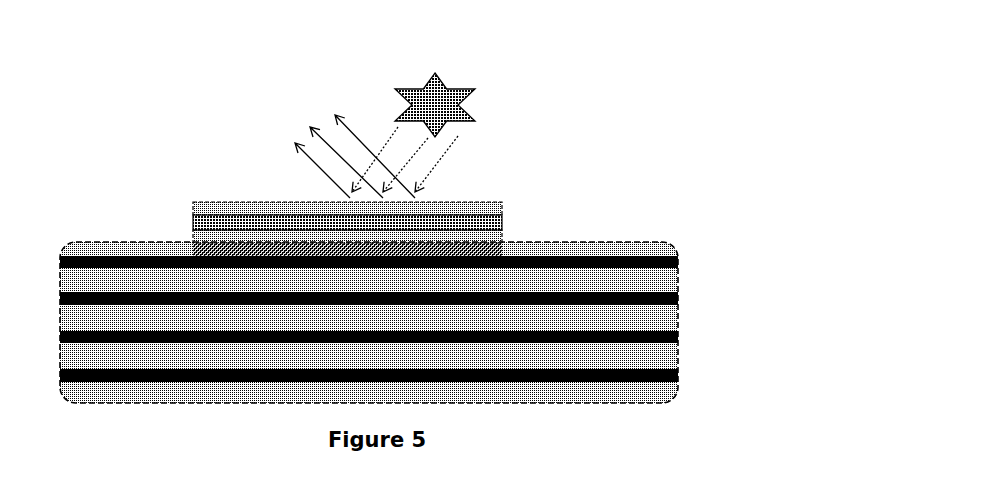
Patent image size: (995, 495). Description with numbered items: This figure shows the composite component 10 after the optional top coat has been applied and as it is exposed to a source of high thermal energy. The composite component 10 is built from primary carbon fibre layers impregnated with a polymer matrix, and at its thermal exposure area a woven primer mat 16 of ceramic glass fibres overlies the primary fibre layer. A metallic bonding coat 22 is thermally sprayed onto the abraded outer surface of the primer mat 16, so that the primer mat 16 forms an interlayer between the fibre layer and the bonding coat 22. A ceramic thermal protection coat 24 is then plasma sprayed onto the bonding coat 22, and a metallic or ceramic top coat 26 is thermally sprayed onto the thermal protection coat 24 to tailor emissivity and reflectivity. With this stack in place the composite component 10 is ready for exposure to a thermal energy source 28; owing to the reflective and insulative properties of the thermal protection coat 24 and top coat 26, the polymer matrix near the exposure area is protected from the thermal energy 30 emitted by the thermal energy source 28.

The composite component 10 is at (457, 241).
The primer mat 16 is at (180, 241).
The bonding coat 22 is at (503, 238).
The thermal protection coat 24 is at (503, 223).
The top coat 26 is at (485, 202).
The thermal energy source 28 is at (397, 102).
The thermal energy 30 is at (273, 150).